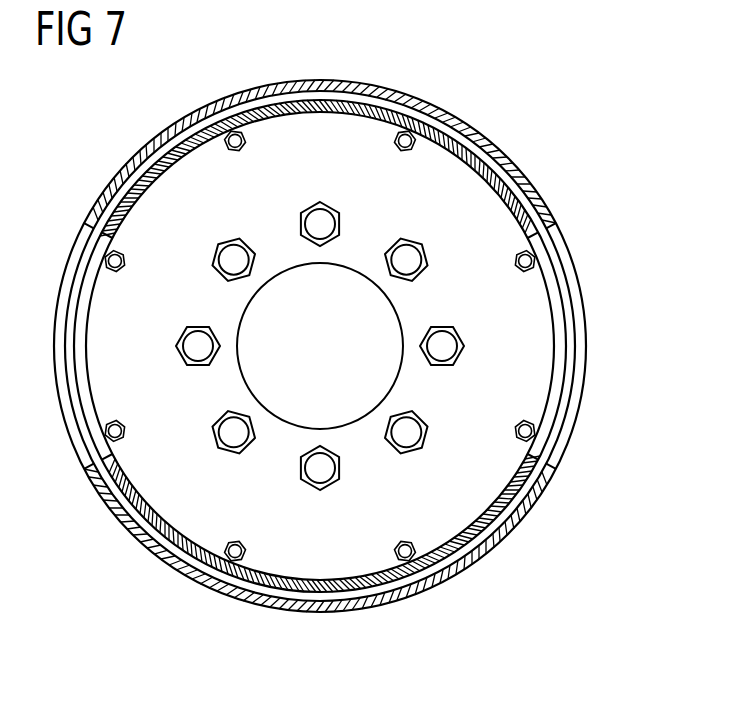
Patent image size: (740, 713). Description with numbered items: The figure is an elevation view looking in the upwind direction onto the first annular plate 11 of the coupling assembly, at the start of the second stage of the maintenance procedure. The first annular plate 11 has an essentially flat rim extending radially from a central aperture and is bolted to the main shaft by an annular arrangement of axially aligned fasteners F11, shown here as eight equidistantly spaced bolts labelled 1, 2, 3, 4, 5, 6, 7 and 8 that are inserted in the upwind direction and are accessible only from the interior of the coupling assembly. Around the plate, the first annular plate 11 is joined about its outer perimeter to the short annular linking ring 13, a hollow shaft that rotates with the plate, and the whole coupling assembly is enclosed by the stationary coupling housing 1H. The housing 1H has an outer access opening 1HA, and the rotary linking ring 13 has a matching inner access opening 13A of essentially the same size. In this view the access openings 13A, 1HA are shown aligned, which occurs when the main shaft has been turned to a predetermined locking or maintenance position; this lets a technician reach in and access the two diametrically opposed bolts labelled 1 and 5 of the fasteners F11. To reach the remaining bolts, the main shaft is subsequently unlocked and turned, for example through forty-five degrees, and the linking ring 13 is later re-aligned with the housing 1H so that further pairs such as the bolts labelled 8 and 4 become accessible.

The coupling housing 1H is at (358, 330).
The outer access opening 1HA is at (70, 292).
The first annular plate 11 is at (277, 133).
The linking ring 13 is at (359, 380).
The inner access opening 13A is at (554, 286).
The fasteners F11 is at (338, 346).
The bolt labelled one 1 is at (442, 346).
The bolt labelled two 2 is at (406, 432).
The bolt labelled three 3 is at (320, 468).
The bolt labelled four 4 is at (234, 432).
The bolt labelled five 5 is at (198, 346).
The bolt labelled six 6 is at (234, 260).
The bolt labelled seven 7 is at (320, 224).
The bolt labelled eight 8 is at (406, 260).